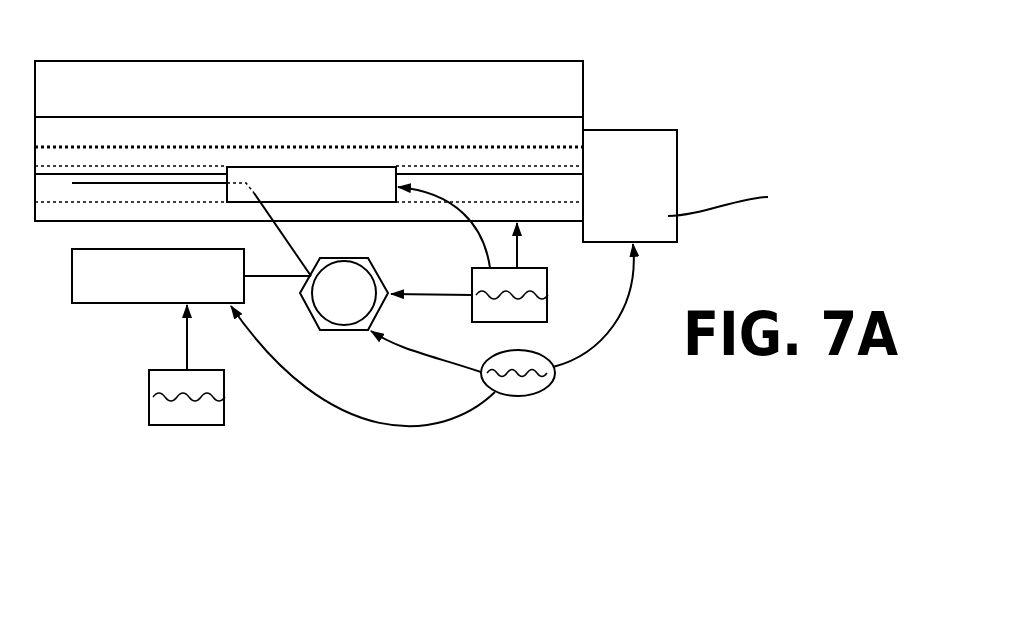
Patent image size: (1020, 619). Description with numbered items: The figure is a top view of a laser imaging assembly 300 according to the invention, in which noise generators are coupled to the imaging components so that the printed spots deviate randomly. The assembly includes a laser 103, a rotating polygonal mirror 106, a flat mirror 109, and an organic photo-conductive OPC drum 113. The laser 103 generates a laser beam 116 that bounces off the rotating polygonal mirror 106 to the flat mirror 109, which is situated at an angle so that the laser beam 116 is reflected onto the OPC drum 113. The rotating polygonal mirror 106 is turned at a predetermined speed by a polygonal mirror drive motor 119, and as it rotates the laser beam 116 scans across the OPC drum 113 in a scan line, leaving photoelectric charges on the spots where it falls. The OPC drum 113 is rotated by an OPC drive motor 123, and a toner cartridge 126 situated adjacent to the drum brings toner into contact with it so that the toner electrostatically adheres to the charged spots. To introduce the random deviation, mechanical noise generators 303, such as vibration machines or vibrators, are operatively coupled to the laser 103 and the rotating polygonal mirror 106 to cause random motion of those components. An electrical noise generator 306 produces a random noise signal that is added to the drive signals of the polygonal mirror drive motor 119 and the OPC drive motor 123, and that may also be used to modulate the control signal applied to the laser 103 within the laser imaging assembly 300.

The laser 103 is at (140, 307).
The rotating polygonal mirror 106 is at (306, 311).
The flat mirror 109 is at (312, 181).
The OPC drum 113 is at (58, 186).
The laser beam 116 is at (299, 248).
The polygonal mirror drive motor 119 is at (341, 300).
The OPC drive motor 123 is at (685, 187).
The toner cartridge 126 is at (586, 91).
The laser imaging assembly 300 is at (683, 437).
The mechanical noise generator 303 is at (550, 298).
The electrical noise generator 306 is at (518, 403).